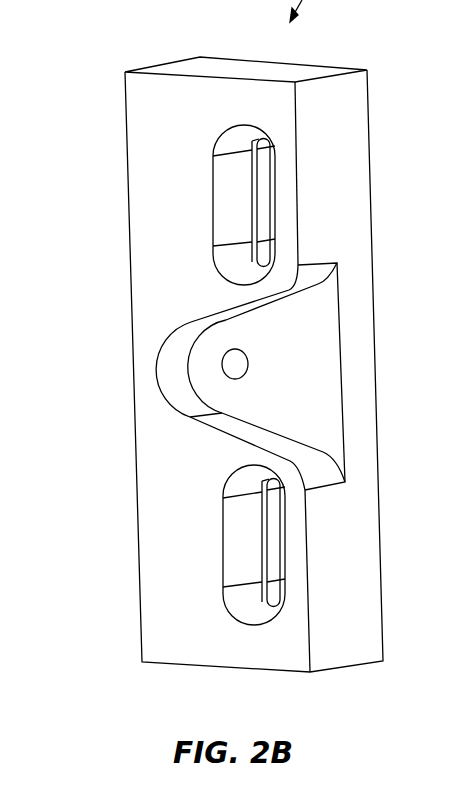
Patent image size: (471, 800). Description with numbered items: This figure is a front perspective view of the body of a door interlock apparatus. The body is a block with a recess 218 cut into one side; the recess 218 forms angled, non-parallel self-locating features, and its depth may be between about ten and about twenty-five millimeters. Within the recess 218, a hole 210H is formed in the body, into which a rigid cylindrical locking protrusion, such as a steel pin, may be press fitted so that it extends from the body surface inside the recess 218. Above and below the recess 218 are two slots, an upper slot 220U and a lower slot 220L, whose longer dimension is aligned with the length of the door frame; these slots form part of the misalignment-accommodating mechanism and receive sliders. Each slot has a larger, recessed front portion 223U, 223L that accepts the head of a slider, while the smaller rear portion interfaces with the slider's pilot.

The upper slot 220U is at (233, 122).
The front portion of the upper slot 223U is at (228, 210).
The hole 210H is at (234, 349).
The recess 218 is at (163, 375).
The front portion of the lower slot 223L is at (231, 535).
The lower slot 220L is at (224, 580).